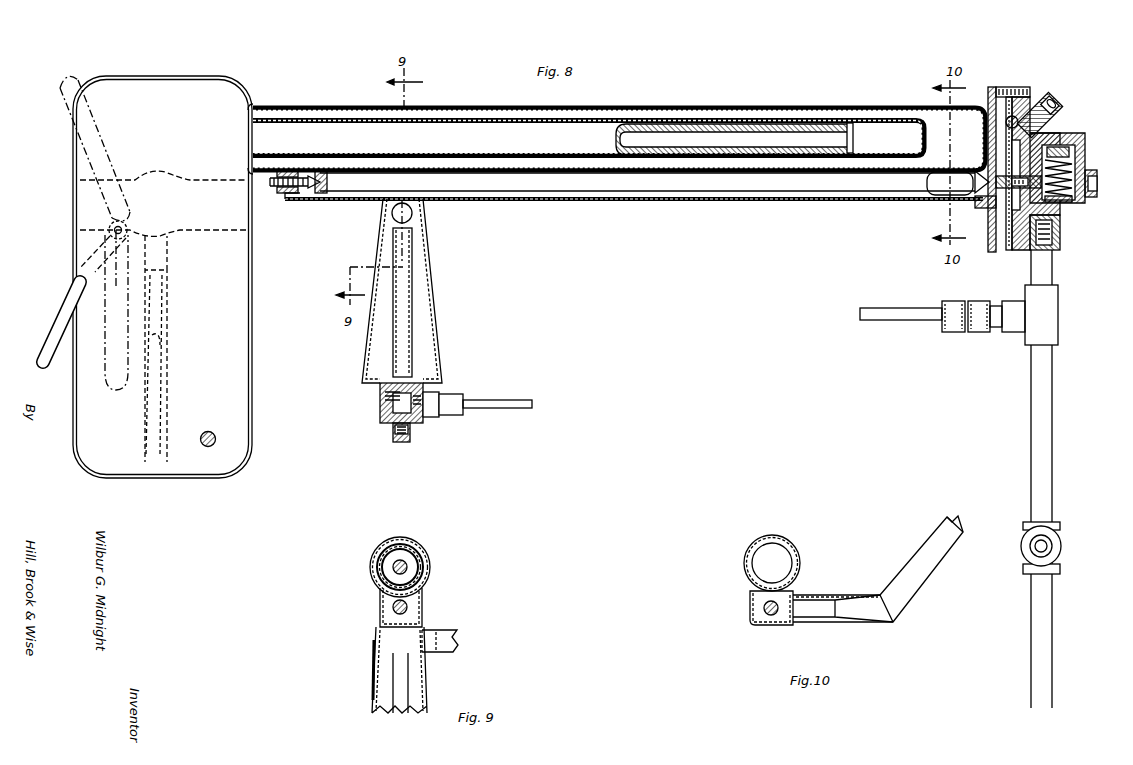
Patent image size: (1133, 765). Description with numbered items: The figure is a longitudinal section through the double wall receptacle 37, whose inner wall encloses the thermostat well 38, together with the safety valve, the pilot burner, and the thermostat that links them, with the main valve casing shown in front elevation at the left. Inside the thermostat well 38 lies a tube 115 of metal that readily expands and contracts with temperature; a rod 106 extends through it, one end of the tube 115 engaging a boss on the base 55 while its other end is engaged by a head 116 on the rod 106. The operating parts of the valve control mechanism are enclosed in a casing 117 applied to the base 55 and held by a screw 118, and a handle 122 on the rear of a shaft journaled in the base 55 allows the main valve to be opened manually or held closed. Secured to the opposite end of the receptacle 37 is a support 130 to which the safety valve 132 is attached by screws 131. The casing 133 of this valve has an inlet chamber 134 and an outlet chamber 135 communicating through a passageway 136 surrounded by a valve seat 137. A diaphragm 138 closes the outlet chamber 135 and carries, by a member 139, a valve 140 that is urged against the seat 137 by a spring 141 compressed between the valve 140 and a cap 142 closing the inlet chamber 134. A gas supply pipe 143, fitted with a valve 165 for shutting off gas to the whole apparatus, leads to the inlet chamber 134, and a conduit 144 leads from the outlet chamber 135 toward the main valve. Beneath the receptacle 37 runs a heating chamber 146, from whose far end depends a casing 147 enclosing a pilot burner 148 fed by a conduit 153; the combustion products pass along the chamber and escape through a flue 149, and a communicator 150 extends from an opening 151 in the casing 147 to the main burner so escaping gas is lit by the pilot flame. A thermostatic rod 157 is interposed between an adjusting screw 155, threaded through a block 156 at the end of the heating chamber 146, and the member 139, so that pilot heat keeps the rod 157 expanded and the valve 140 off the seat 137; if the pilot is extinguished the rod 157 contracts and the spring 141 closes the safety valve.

In FIG. 8, the double wall receptacle 37 is at (800, 112).
In FIG. 9, the double wall receptacle 37 is at (433, 568).
In FIG. 10, the double wall receptacle 37 is at (786, 537).
In FIG. 8, the thermostat well 38 is at (880, 118).
In FIG. 9, the thermostat well 38 is at (400, 540).
In FIG. 10, the thermostat well 38 is at (762, 570).
In FIG. 8, the base 55 is at (250, 272).
In FIG. 8, the rod 106 is at (804, 138).
In FIG. 9, the rod 106 is at (406, 562).
In FIG. 8, the tube 115 is at (662, 125).
In FIG. 9, the tube 115 is at (382, 569).
In FIG. 8, the head 116 is at (855, 140).
In FIG. 8, the casing 117 is at (207, 351).
In FIG. 8, the screw 118 is at (216, 440).
In FIG. 8, the handle 122 is at (56, 324).
In FIG. 8, the support 130 is at (998, 87).
In FIG. 8, the screws 131 is at (988, 88).
In FIG. 8, the safety valve 132 is at (1080, 134).
In FIG. 8, the casing 133 is at (1026, 252).
In FIG. 8, the inlet chamber 134 is at (1072, 153).
In FIG. 8, the outlet chamber 135 is at (998, 200).
In FIG. 8, the passageway 136 is at (1058, 244).
In FIG. 8, the valve seat 137 is at (1067, 123).
In FIG. 8, the diaphragm 138 is at (1006, 135).
In FIG. 8, the member 139 is at (996, 165).
In FIG. 8, the valve 140 is at (1074, 204).
In FIG. 8, the spring 141 is at (1076, 200).
In FIG. 8, the cap 142 is at (1097, 184).
In FIG. 8, the gas supply pipe 143 is at (1046, 280).
In FIG. 8, the conduit 144 is at (1036, 102).
In FIG. 8, the heating chamber 146 is at (606, 190).
In FIG. 9, the heating chamber 146 is at (426, 604).
In FIG. 10, the heating chamber 146 is at (750, 616).
In FIG. 8, the casing 147 is at (433, 285).
In FIG. 9, the casing 147 is at (372, 700).
In FIG. 8, the pilot burner 148 is at (412, 328).
In FIG. 9, the pilot burner 148 is at (400, 710).
In FIG. 8, the flue 149 is at (918, 195).
In FIG. 10, the flue 149 is at (910, 568).
In FIG. 9, the communicator 150 is at (458, 641).
In FIG. 8, the opening 151 is at (412, 213).
In FIG. 8, the conduit 153 is at (510, 400).
In FIG. 8, the adjusting screw 155 is at (306, 190).
In FIG. 8, the block 156 is at (292, 196).
In FIG. 8, the thermostatic rod 157 is at (686, 182).
In FIG. 9, the thermostatic rod 157 is at (392, 607).
In FIG. 10, the thermostatic rod 157 is at (770, 622).
In FIG. 8, the valve 165 is at (1062, 535).